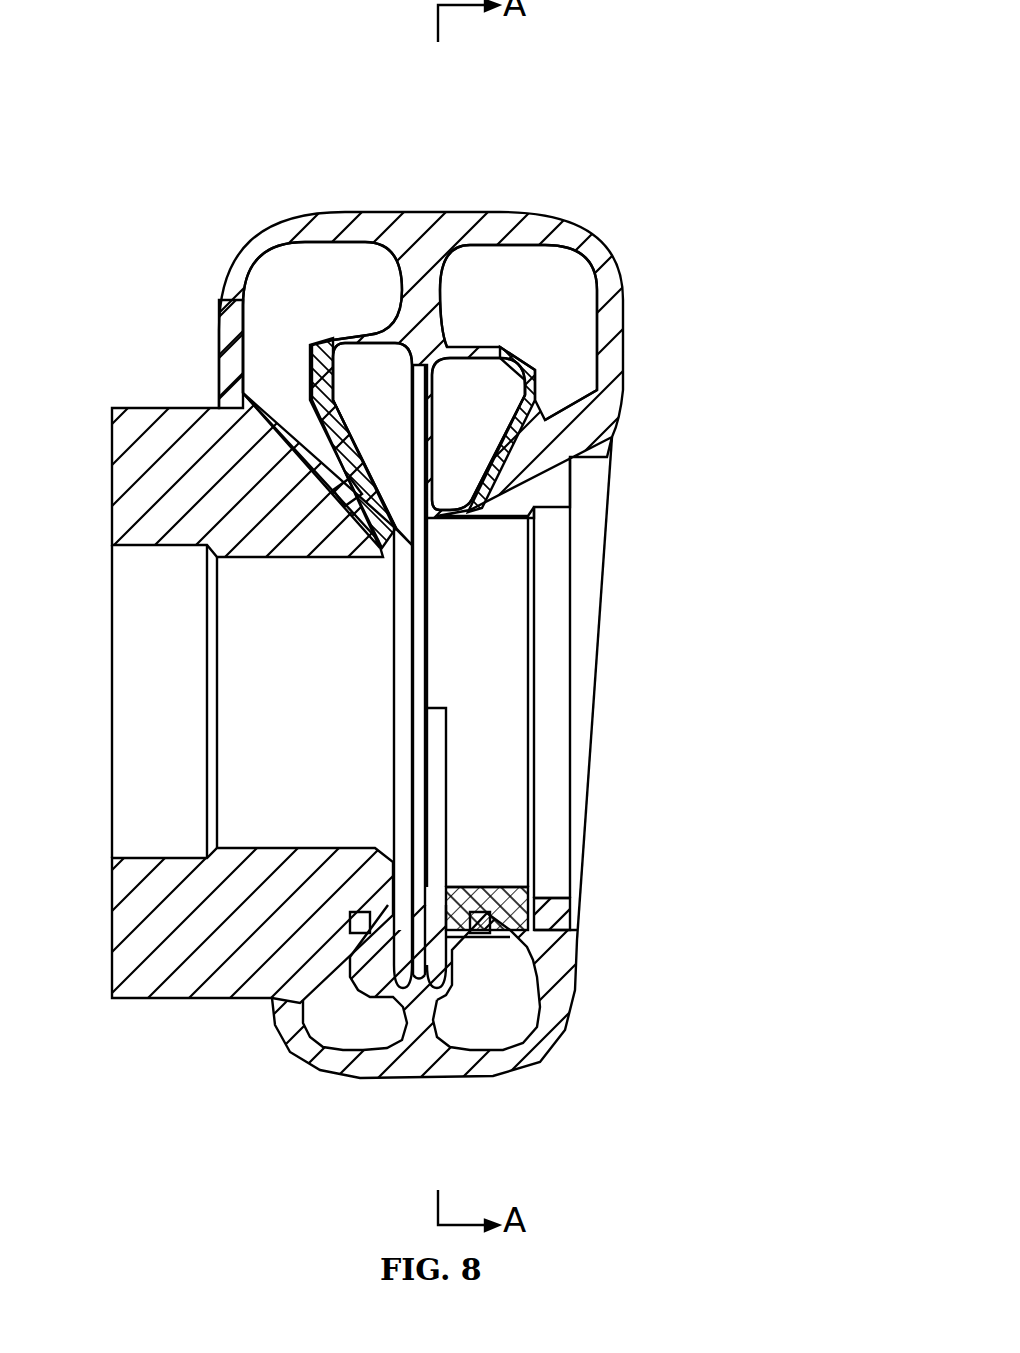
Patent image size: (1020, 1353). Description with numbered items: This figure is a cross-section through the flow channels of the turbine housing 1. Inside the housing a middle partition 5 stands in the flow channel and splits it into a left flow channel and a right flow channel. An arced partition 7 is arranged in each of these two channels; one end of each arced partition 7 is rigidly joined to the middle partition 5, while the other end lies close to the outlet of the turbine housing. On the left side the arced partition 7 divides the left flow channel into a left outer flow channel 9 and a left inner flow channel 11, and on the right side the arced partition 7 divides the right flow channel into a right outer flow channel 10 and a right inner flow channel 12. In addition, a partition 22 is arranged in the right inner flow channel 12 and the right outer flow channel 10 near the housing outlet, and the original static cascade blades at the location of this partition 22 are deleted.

The turbine housing 1 is at (370, 594).
The middle partition 5 is at (500, 498).
The arced partition 7 is at (433, 571).
The left outer flow channel 9 is at (279, 216).
The right outer flow channel 10 is at (586, 217).
The left inner flow channel 11 is at (313, 606).
The right inner flow channel 12 is at (604, 661).
The partition 22 is at (602, 702).